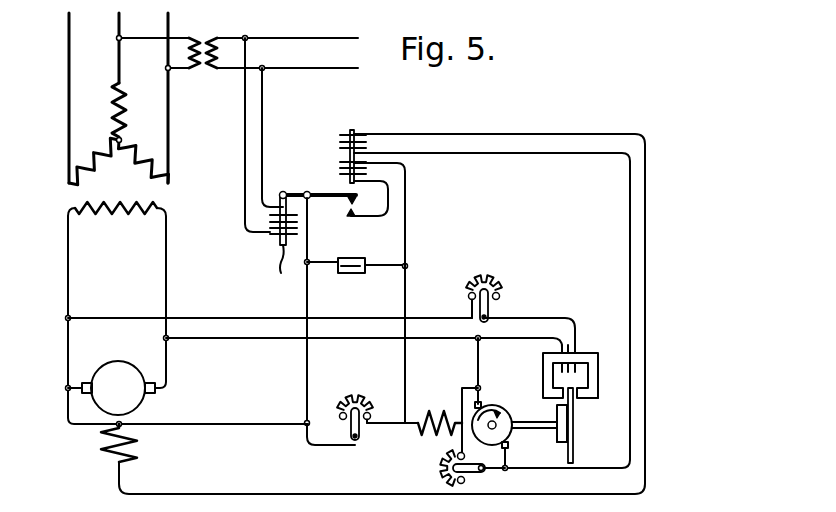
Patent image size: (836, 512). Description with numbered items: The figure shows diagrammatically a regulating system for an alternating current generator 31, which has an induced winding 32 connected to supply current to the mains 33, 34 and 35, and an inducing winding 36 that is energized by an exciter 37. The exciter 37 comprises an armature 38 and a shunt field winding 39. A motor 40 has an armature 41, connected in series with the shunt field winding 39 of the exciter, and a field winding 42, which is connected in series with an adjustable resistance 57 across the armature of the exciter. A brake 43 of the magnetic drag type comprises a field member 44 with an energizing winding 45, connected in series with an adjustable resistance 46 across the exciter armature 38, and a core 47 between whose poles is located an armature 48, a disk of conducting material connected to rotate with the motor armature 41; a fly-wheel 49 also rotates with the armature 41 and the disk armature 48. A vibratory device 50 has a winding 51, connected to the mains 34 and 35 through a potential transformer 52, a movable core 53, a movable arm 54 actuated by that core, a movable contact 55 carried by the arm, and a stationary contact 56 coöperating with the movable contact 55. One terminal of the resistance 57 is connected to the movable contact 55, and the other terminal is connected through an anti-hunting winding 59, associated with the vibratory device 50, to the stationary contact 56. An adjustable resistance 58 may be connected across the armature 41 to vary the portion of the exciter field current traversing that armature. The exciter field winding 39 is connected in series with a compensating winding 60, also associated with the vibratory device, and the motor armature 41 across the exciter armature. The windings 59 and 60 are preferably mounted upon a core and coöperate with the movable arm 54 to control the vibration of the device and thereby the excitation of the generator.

The alternating current generator 31 is at (108, 108).
The induced winding 32 is at (128, 128).
The main 33 is at (66, 23).
The main 34 is at (116, 23).
The main 35 is at (165, 23).
The inducing winding 36 is at (118, 218).
The exciter 37 is at (111, 380).
The armature 38 is at (140, 366).
The shunt field winding 39 is at (136, 445).
The motor 40 is at (496, 423).
The armature 41 is at (506, 418).
The field winding 42 is at (433, 410).
The brake 43 is at (583, 423).
The field member 44 is at (584, 369).
The energizing winding 45 is at (577, 347).
The adjustable resistance 46 is at (483, 278).
The core 47 is at (598, 387).
The armature 48 is at (575, 460).
The fly-wheel 49 is at (558, 441).
The vibratory device 50 is at (343, 165).
The winding 51 is at (271, 234).
The potential transformer 52 is at (204, 38).
The movable core 53 is at (282, 270).
The movable arm 54 is at (318, 192).
The movable contact 55 is at (367, 199).
The stationary contact 56 is at (346, 213).
The adjustable resistance 57 is at (357, 394).
The adjustable resistance 58 is at (440, 469).
The anti-hunting winding 59 is at (344, 152).
The compensating winding 60 is at (339, 138).